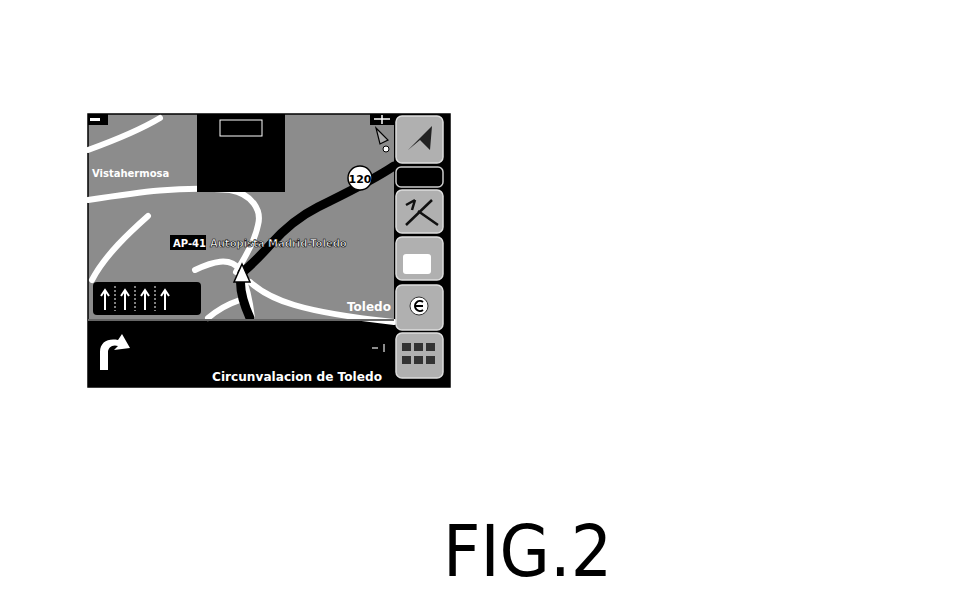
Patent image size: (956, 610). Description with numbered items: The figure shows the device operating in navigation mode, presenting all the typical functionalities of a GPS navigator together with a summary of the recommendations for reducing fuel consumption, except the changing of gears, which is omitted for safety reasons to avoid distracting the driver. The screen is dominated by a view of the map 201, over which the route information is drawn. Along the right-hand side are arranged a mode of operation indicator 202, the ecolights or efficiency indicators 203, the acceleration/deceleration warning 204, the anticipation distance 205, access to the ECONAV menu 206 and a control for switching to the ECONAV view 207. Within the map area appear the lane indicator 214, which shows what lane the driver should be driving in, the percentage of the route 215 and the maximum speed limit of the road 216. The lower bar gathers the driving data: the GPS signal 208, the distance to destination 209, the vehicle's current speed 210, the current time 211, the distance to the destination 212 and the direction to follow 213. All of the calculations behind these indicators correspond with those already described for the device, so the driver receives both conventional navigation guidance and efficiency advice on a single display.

The map view 201 is at (229, 140).
The mode of operation indicator 202 is at (439, 126).
The ecolights or efficiency indicators 203 is at (441, 178).
The acceleration/deceleration warning 204 is at (441, 226).
The anticipation distance 205 is at (441, 272).
The access to the ECONAV menu 206 is at (441, 322).
The switching to ECONAV view 207 is at (441, 370).
The GPS signal 208 is at (388, 352).
The distance to destination 209 is at (338, 352).
The vehicle's current speed 210 is at (300, 352).
The current time 211 is at (240, 354).
The distance to the destination 212 is at (191, 380).
The direction to follow 213 is at (111, 357).
The lane indicator 214 is at (103, 289).
The percentage of the route 215 is at (119, 318).
The maximum speed limit of the road 216 is at (372, 120).